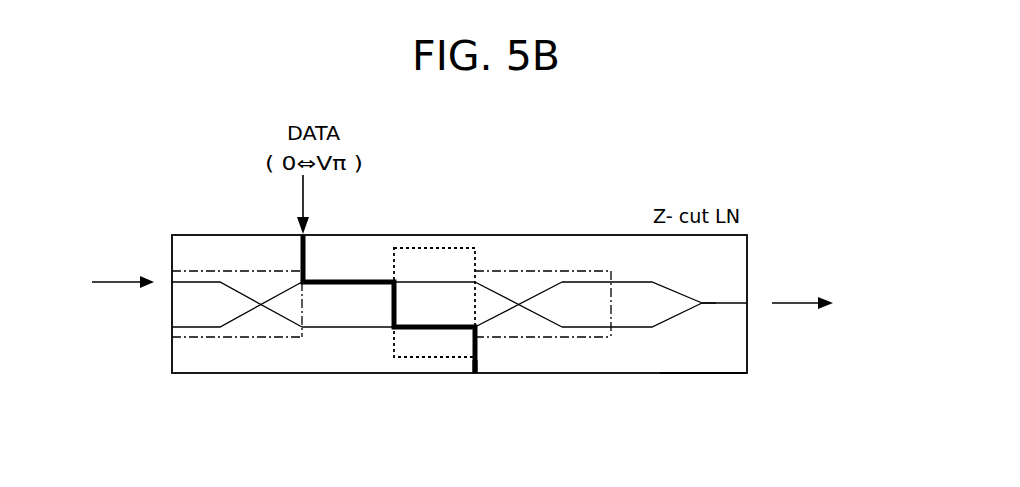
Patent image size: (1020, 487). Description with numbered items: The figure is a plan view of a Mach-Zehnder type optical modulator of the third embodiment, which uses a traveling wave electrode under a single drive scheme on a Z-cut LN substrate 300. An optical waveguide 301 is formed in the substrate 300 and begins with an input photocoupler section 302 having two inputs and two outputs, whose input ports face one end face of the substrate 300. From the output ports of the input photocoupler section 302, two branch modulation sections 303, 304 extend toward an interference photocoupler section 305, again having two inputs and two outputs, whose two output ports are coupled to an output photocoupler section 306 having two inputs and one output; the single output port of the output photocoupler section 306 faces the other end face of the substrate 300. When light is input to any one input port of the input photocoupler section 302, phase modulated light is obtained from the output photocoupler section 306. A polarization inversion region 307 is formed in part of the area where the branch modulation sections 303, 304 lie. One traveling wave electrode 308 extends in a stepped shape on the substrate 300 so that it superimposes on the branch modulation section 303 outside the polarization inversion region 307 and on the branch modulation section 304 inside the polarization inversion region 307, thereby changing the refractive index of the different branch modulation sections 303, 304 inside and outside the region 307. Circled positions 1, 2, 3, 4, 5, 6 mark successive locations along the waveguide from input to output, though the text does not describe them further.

The LN substrate 300 is at (540, 235).
The optical waveguide 301 is at (686, 335).
The input photocoupler section 302 is at (218, 338).
The branch modulation section 303 is at (428, 281).
The branch modulation section 304 is at (371, 327).
The interference photocoupler section 305 is at (523, 340).
The output photocoupler section 306 is at (722, 302).
The polarization inversion region 307 is at (435, 357).
The traveling wave electrode 308 is at (337, 281).
The position 1 (input) 1 is at (237, 304).
The position 2 (coupler crossing) 2 is at (500, 292).
The position 3 (electrode end) 3 is at (477, 373).
The position 4 (upper arm) 4 is at (586, 281).
The position 5 (lower arm) 5 is at (586, 328).
The position 6 (output junction) 6 is at (719, 319).